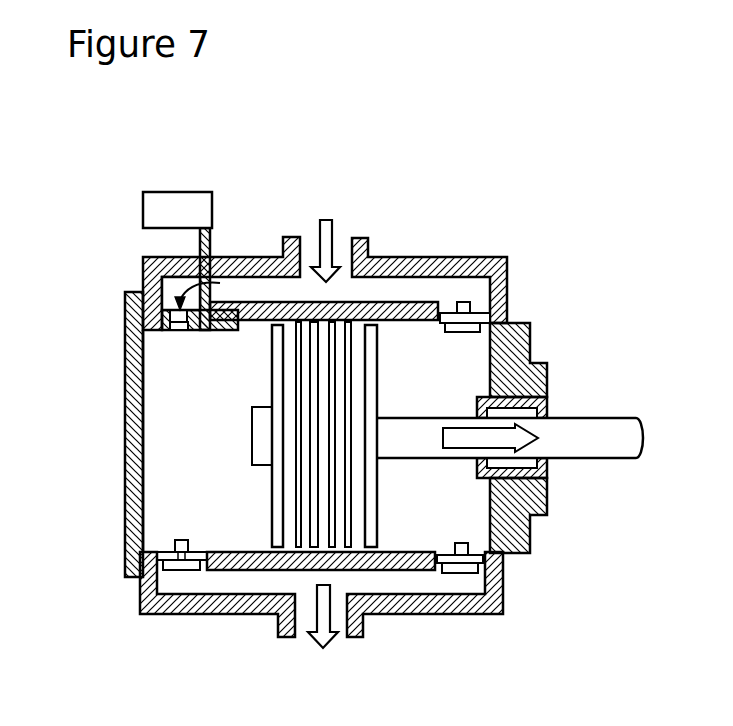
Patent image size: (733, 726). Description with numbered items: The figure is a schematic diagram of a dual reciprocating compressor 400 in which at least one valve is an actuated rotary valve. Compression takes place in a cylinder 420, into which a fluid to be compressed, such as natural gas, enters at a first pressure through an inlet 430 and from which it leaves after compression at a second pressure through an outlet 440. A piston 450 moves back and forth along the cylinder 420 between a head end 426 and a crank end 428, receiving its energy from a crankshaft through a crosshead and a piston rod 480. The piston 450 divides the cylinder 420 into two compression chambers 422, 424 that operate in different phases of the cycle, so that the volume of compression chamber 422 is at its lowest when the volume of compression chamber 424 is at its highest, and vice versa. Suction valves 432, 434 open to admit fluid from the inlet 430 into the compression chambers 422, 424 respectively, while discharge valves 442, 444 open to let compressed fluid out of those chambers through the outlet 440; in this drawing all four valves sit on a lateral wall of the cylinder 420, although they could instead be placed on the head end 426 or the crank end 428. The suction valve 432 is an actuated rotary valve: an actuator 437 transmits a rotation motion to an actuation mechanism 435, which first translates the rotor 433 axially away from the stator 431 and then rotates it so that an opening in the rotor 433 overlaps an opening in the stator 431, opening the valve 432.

The dual reciprocating compressor 400 is at (541, 210).
The cylinder 420 is at (387, 560).
The compression chamber 422 is at (157, 487).
The compression chamber 424 is at (462, 523).
The head end 426 is at (130, 417).
The crank end 428 is at (510, 353).
The inlet 430 is at (328, 230).
The stator 431 is at (163, 313).
The rotary valve 432 is at (163, 328).
The rotor 433 is at (163, 327).
The suction valve 434 is at (490, 323).
The actuation mechanism 435 is at (212, 248).
The actuator 437 is at (167, 210).
The outlet 440 is at (313, 643).
The discharge valve 442 is at (178, 562).
The discharge valve 444 is at (462, 573).
The piston 450 is at (285, 540).
The piston rod 480 is at (583, 428).